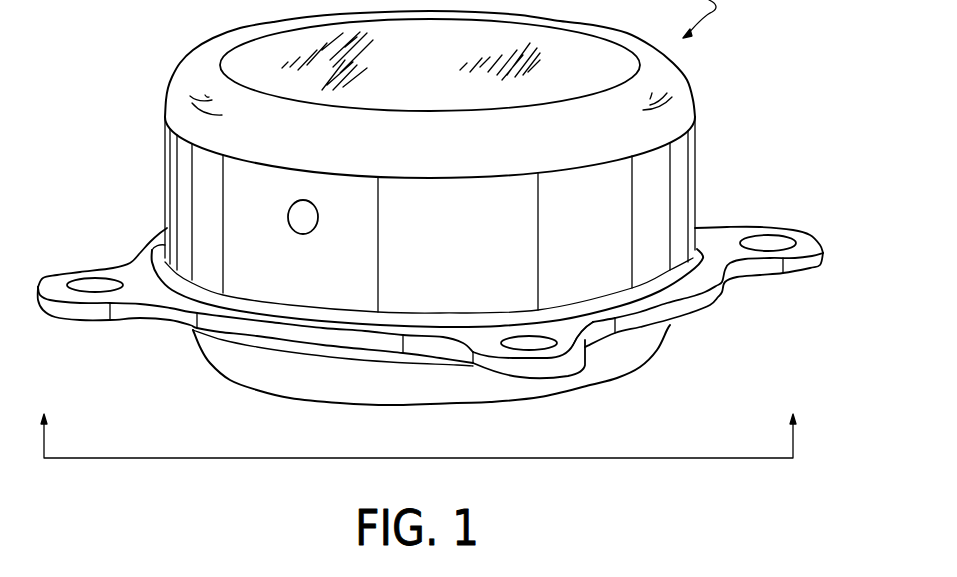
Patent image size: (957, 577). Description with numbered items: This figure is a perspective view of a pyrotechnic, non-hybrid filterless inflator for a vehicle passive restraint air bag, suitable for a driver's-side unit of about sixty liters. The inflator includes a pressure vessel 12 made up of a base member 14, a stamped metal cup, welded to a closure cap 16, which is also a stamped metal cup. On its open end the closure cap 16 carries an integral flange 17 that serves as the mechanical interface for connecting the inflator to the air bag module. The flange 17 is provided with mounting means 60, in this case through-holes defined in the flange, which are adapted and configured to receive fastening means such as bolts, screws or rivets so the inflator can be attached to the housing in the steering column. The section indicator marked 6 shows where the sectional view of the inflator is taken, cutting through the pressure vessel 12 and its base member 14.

The pressure vessel 12 is at (762, 221).
The base member 14 is at (583, 388).
The closure cap 16 is at (697, 173).
The flange 17 is at (703, 283).
The mounting means 60 is at (575, 350).
The section line 6- 6 is at (430, 436).